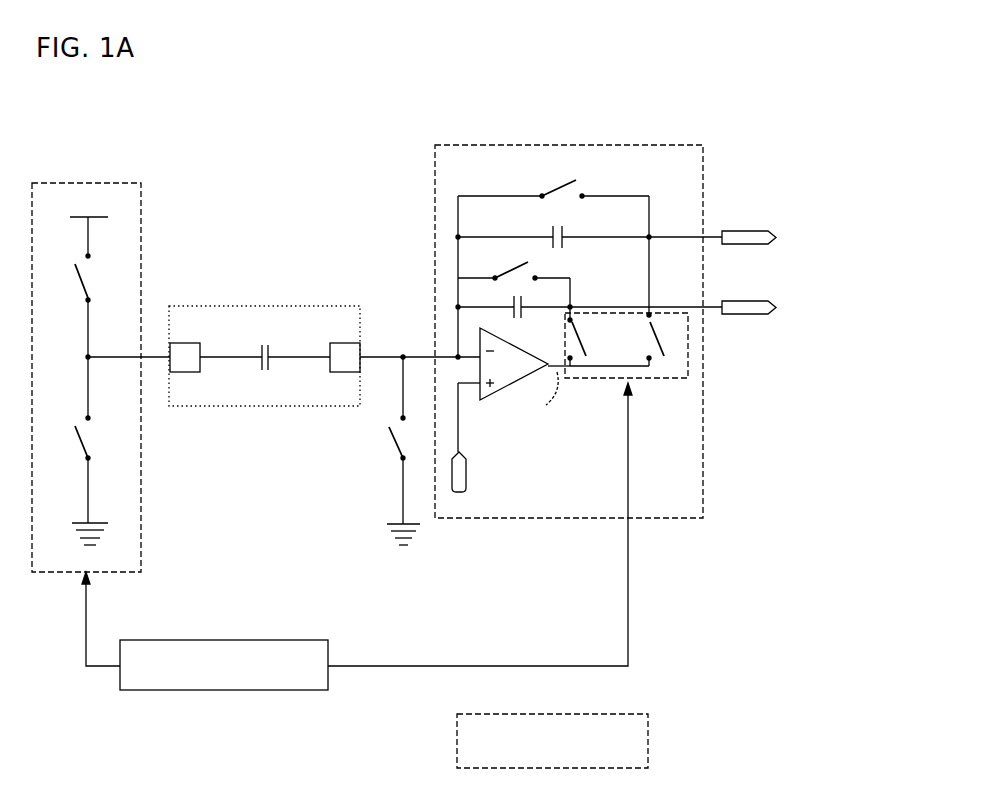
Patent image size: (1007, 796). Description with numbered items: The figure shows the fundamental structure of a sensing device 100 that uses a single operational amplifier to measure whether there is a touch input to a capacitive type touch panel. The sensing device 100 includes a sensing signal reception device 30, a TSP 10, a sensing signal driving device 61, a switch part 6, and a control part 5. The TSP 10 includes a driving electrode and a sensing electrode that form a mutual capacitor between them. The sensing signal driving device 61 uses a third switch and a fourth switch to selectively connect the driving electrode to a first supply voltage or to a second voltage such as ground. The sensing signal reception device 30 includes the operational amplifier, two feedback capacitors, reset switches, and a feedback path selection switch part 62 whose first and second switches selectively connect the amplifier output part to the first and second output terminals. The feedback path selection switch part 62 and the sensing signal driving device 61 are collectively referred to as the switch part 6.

The sensing device 100 is at (257, 121).
The sensing signal driving device 61 is at (86, 182).
The switch part 6 is at (650, 742).
The TSP 10 is at (265, 305).
The sensing signal reception device 30 is at (570, 144).
The feedback path selection switch part 62 is at (688, 345).
The control part 5 is at (224, 639).